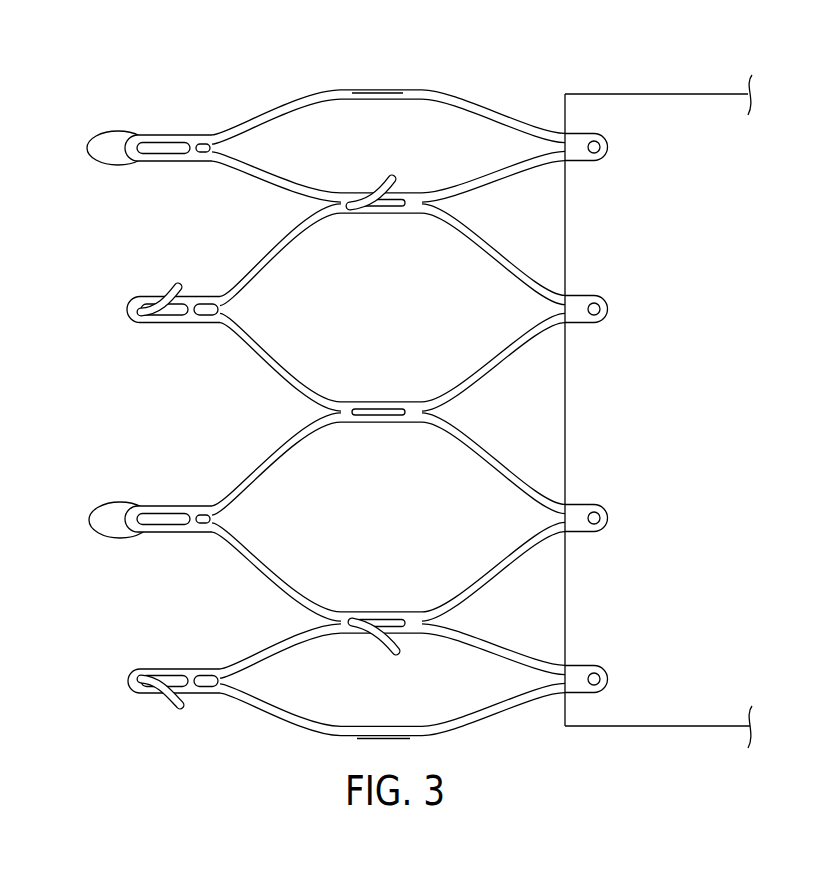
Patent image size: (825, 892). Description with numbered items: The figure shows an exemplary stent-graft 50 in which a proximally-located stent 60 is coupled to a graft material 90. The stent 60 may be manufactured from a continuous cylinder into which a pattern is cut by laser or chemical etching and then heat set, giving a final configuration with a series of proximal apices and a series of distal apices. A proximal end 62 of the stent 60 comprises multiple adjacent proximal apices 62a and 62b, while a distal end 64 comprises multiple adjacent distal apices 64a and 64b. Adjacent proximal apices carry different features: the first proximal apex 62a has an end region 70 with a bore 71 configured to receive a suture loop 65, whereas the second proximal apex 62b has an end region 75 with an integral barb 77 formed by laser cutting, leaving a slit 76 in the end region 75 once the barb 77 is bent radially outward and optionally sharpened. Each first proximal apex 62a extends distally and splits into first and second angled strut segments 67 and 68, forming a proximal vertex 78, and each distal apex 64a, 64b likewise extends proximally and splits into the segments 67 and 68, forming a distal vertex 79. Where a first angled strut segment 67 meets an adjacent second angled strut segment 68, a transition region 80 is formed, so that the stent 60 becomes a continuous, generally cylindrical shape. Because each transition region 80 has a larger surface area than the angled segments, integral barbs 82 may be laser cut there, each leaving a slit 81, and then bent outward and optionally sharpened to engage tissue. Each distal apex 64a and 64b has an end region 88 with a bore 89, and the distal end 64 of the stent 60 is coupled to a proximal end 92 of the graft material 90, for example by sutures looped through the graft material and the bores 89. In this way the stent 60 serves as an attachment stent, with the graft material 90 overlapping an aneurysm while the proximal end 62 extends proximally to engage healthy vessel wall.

The stent-graft 50 is at (381, 398).
The stent 60 is at (373, 80).
The proximal end 62 is at (175, 407).
The first proximal apex 62a is at (110, 339).
The second proximal apex 62b is at (119, 496).
The distal end 64 is at (619, 375).
The first distal apex 64a is at (608, 162).
The second distal apex 64b is at (626, 464).
The suture loop 65 is at (97, 160).
The first angled strut segment 67 is at (490, 368).
The second angled strut segment 68 is at (487, 250).
The end region 70 is at (176, 162).
The bore 71 is at (163, 140).
The end region 75 is at (136, 322).
The slit 76 is at (171, 318).
The barb 77 is at (165, 284).
The proximal vertex 78 is at (236, 311).
The distal vertex 79 is at (388, 412).
The transition region 80 is at (385, 215).
The slit 81 is at (399, 200).
The barb 82 is at (388, 186).
The end region 88 is at (590, 296).
The bore 89 is at (599, 322).
The graft material 90 is at (658, 425).
The proximal end 92 is at (580, 728).